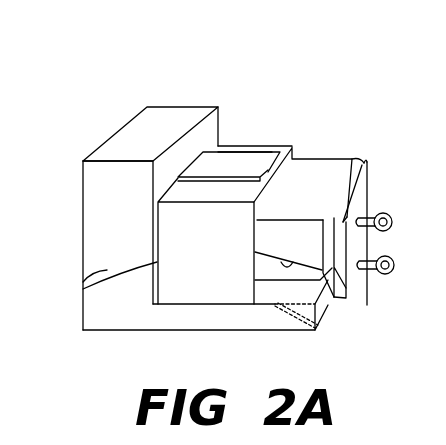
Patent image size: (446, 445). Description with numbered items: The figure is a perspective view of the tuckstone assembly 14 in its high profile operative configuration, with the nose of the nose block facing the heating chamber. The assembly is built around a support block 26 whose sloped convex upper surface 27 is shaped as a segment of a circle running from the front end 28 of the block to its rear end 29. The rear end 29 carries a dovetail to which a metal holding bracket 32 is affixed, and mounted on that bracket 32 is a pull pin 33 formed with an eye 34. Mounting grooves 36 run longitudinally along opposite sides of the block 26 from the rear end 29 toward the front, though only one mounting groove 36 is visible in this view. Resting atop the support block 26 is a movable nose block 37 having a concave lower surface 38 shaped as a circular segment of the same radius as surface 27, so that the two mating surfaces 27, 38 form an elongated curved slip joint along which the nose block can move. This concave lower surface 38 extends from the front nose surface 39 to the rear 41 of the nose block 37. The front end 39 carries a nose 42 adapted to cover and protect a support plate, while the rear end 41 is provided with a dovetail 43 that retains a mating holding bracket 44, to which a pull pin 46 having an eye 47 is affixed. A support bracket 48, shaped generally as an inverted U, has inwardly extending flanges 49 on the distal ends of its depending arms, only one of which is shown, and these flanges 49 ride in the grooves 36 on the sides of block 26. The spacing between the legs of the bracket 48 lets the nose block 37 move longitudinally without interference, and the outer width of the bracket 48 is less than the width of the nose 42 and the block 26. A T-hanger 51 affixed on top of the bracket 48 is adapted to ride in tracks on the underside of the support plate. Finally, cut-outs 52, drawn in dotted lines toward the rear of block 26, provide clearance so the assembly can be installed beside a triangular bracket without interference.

The tuckstone assembly 14 is at (233, 91).
The support block 26 is at (188, 320).
The upper surface 27 is at (82, 281).
The front end 28 is at (103, 333).
The rear end 29 is at (350, 287).
The holding bracket 32 is at (347, 298).
The pull pin 33 is at (392, 273).
The eye 34 is at (394, 265).
The mounting groove 36 is at (335, 300).
The nose block 37 is at (325, 160).
The lower surface 38 is at (298, 258).
The front nose surface 39 is at (83, 178).
The rear 41 is at (338, 168).
The nose 42 is at (95, 212).
The dovetail 43 is at (348, 183).
The holding bracket 44 is at (367, 160).
The pull pin 46 is at (393, 232).
The eye 47 is at (388, 210).
The support bracket 48 is at (278, 145).
The flange 49 is at (253, 282).
The T-hanger 51 is at (236, 148).
The cut-out 52 is at (312, 328).